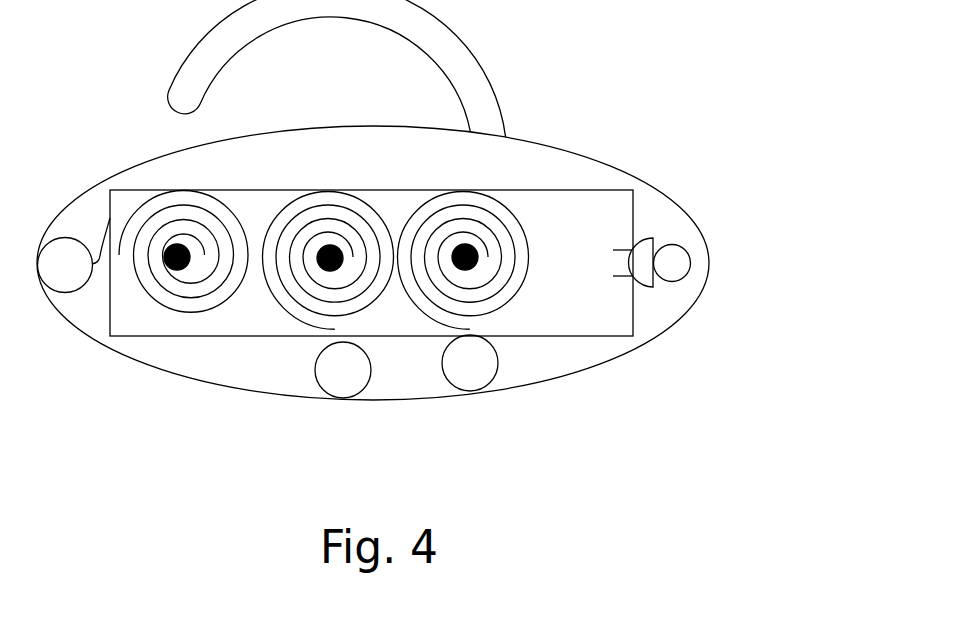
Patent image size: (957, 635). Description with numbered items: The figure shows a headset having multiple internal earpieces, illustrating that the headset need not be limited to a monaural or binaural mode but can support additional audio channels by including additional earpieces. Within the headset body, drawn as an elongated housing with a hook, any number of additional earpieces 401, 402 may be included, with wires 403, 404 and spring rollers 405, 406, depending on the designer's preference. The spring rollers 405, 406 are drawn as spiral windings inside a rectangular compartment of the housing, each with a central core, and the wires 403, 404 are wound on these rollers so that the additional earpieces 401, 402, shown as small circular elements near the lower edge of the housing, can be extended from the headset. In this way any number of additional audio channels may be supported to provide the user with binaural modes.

The additional earpiece 401 is at (338, 398).
The additional earpiece 402 is at (468, 388).
The wire 403 is at (292, 322).
The wire 404 is at (497, 312).
The spring roller 405 is at (330, 245).
The spring roller 406 is at (470, 245).